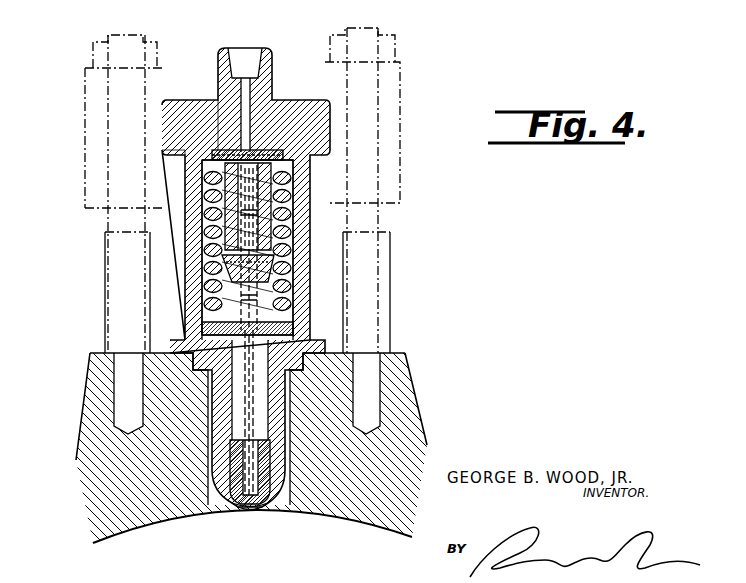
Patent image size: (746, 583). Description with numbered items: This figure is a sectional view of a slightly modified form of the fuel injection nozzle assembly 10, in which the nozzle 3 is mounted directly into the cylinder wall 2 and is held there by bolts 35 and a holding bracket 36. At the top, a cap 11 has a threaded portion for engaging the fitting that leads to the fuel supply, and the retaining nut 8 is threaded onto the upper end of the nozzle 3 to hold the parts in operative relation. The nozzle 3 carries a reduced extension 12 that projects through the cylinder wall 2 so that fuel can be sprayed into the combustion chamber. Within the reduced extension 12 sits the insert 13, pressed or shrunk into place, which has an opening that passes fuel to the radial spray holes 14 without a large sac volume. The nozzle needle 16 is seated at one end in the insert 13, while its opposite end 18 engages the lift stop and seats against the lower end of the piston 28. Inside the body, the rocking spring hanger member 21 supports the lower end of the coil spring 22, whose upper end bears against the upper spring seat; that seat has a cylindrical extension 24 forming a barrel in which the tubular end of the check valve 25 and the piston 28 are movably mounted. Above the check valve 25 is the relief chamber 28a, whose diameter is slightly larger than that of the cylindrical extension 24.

The cylinder wall 2 is at (405, 430).
The nozzle 3 is at (185, 342).
The retaining nut 8 is at (285, 143).
The fuel injector 10 is at (295, 4).
The cap 11 is at (228, 82).
The reduced extension 12 is at (283, 500).
The insert 13 is at (225, 513).
The radial spray holes 14 is at (260, 505).
The nozzle needle 16 is at (170, 518).
The opposite end of nozzle needle 18 is at (300, 293).
The rocking spring hanger member 21 is at (300, 320).
The coil spring 22 is at (290, 212).
The cylindrical extension 24 is at (270, 238).
The check valve 25 is at (210, 178).
The piston 28 is at (207, 232).
The relief chamber 28a is at (210, 128).
The bolts 35 is at (120, 270).
The holding bracket 36 is at (383, 140).